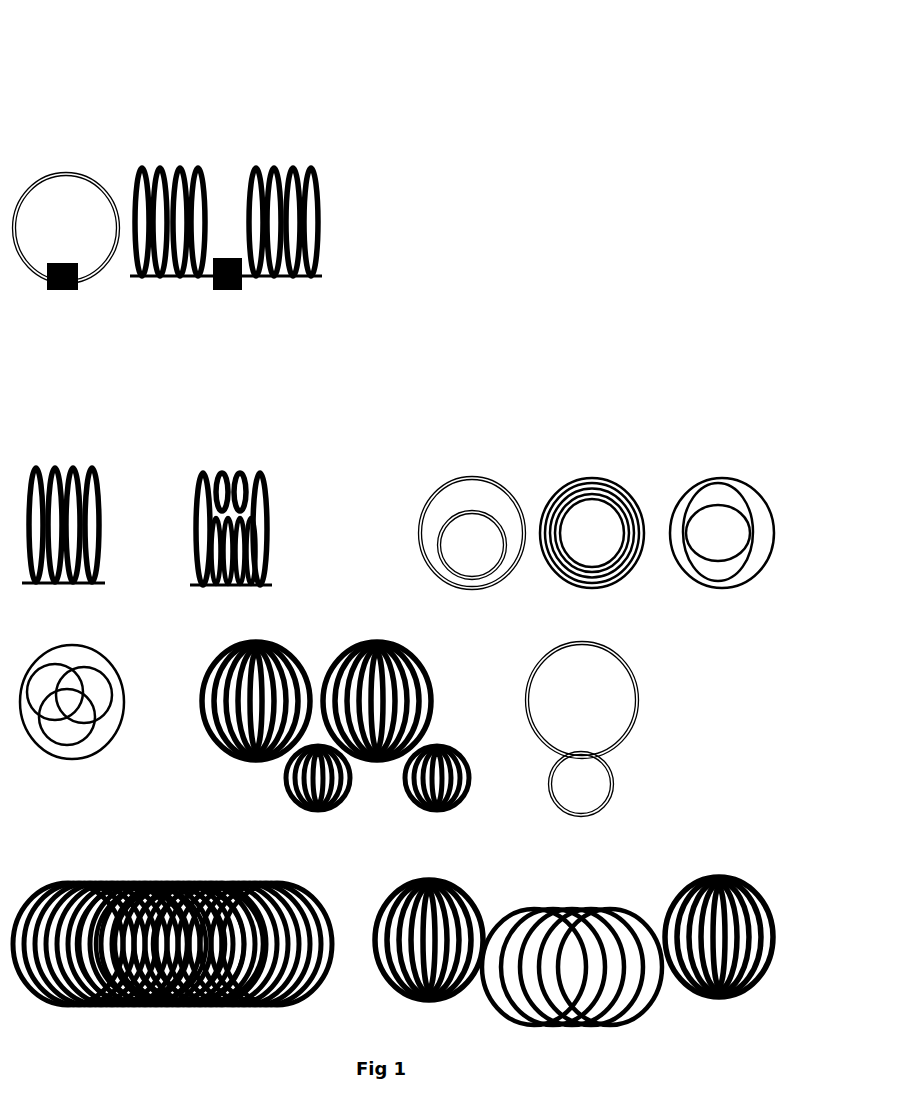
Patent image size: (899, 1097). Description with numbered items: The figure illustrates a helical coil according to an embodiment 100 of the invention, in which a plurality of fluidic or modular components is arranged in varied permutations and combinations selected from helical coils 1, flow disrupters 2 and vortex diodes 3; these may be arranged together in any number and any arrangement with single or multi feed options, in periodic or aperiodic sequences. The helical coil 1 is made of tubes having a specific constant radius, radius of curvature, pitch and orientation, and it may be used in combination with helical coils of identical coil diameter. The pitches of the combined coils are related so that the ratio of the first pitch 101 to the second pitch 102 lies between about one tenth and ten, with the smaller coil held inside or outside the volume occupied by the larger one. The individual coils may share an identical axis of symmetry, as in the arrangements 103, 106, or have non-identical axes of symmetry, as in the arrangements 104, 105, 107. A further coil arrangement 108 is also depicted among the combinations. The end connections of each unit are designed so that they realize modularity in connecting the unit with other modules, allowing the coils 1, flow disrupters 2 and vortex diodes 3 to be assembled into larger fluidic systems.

The embodiment 100 is at (140, 74).
The helical coil 1 is at (283, 160).
The flow disrupter 2 is at (276, 306).
The vortex diode 3 is at (228, 290).
The pitch 101 is at (253, 470).
The pitch 102 is at (262, 545).
The coils with identical axis of symmetry 103 is at (601, 525).
The coils with non-identical axis of symmetry 104 is at (725, 525).
The coils with non-identical axis of symmetry 105 is at (78, 693).
The coils with identical axis of symmetry 106 is at (175, 932).
The coils with non-identical axis of symmetry 107 is at (583, 939).
The barrel coil group 108 is at (340, 726).